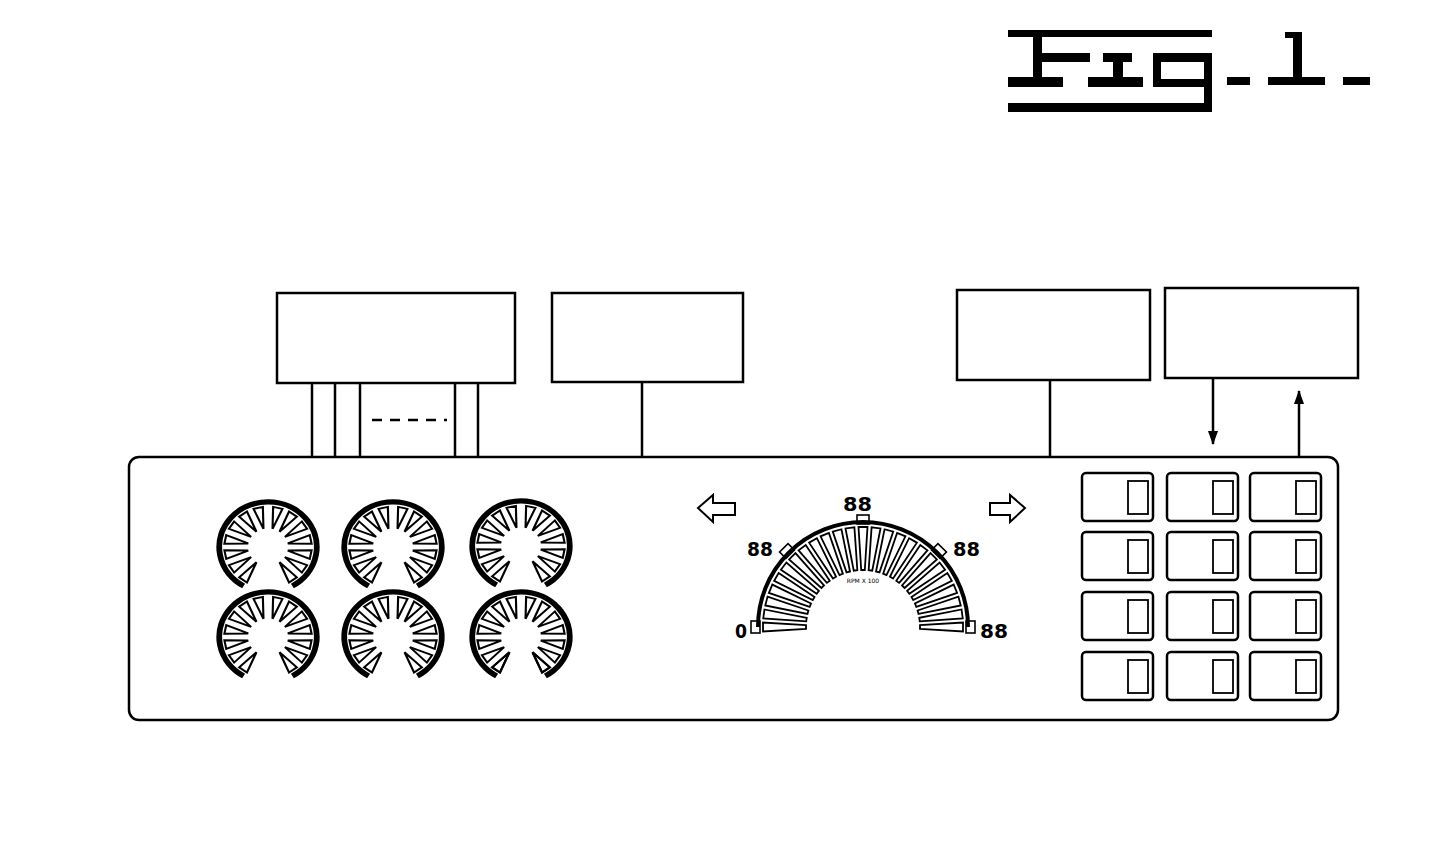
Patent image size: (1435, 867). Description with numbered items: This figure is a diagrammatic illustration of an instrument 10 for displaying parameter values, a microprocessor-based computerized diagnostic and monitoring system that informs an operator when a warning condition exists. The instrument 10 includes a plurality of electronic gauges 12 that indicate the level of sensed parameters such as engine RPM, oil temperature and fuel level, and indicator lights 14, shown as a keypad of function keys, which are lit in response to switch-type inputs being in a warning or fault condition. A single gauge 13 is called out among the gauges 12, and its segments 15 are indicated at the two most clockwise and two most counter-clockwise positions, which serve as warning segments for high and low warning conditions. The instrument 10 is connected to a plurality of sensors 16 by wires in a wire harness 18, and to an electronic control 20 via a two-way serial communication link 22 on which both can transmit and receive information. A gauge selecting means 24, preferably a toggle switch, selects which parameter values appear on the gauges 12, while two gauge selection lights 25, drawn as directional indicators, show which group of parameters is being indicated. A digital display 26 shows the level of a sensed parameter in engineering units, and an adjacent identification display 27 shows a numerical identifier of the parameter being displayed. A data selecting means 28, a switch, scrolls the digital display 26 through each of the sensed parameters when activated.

The instrument 10 is at (301, 745).
The electronic gauges 12 is at (608, 610).
The gauge 13 is at (467, 604).
The indicator lights 14 is at (1056, 650).
The gauge display segments 15 is at (539, 676).
The sensors 16 is at (277, 323).
The wire harness 18 is at (262, 415).
The electronic control 20 is at (1358, 316).
The communication link 22 is at (1348, 429).
The gauge selecting means 24 is at (743, 318).
The gauge selection lights 25 is at (676, 508).
The digital display 26 is at (864, 697).
The identification display 27 is at (836, 631).
The data selecting means 28 is at (957, 335).